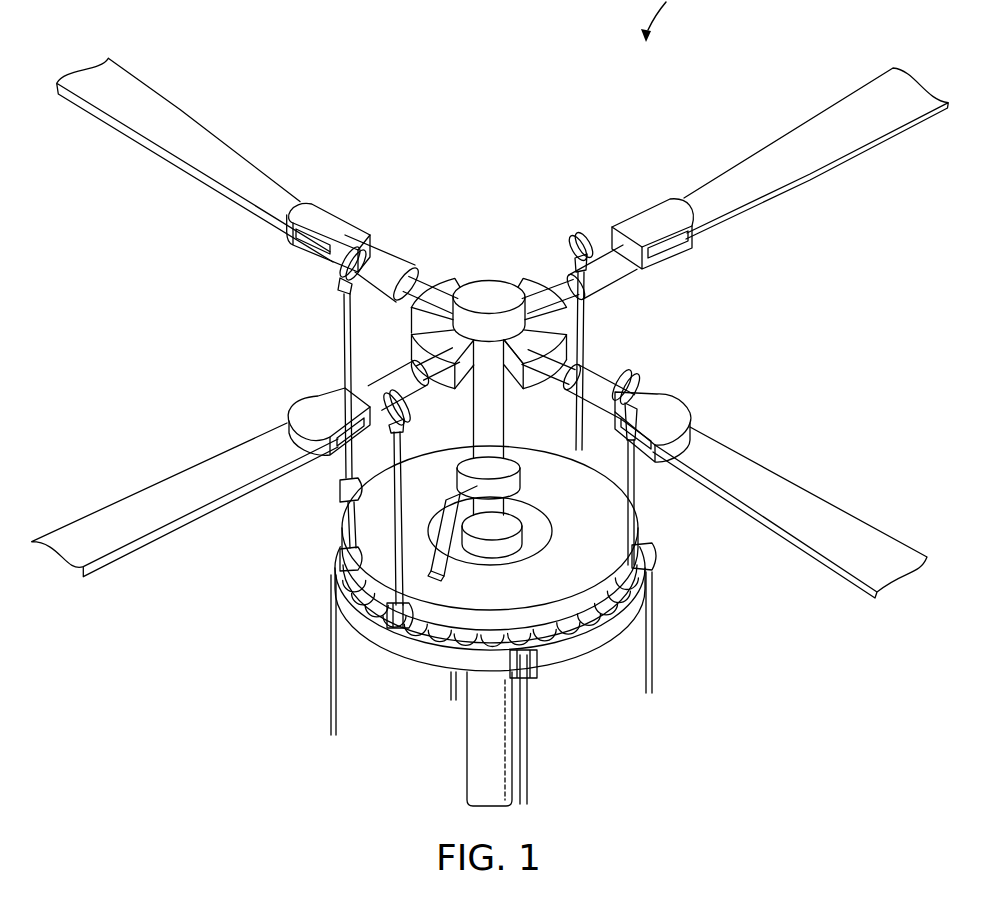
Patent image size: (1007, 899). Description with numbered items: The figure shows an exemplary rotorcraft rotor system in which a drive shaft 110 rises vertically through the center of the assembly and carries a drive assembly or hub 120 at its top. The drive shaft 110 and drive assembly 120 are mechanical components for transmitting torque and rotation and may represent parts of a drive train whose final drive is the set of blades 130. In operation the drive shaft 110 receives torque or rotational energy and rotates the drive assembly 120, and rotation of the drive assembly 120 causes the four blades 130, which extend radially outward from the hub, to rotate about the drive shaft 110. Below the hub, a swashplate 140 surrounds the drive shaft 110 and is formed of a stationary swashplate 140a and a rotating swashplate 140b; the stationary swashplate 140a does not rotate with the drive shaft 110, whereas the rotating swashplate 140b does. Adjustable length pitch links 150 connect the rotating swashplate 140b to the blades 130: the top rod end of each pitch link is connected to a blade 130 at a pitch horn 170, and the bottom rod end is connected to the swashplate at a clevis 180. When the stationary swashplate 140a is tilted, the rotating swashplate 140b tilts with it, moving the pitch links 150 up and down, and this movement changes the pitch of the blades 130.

The drive shaft 110 is at (465, 754).
The drive assembly 120 is at (443, 285).
The blades 130 is at (189, 119).
The swashplate 140 is at (667, 527).
The stationary swashplate 140a is at (567, 650).
The rotating swashplate 140b is at (355, 518).
The pitch links 150 is at (342, 335).
The pitch horn 170 is at (328, 280).
The clevis 180 is at (403, 628).